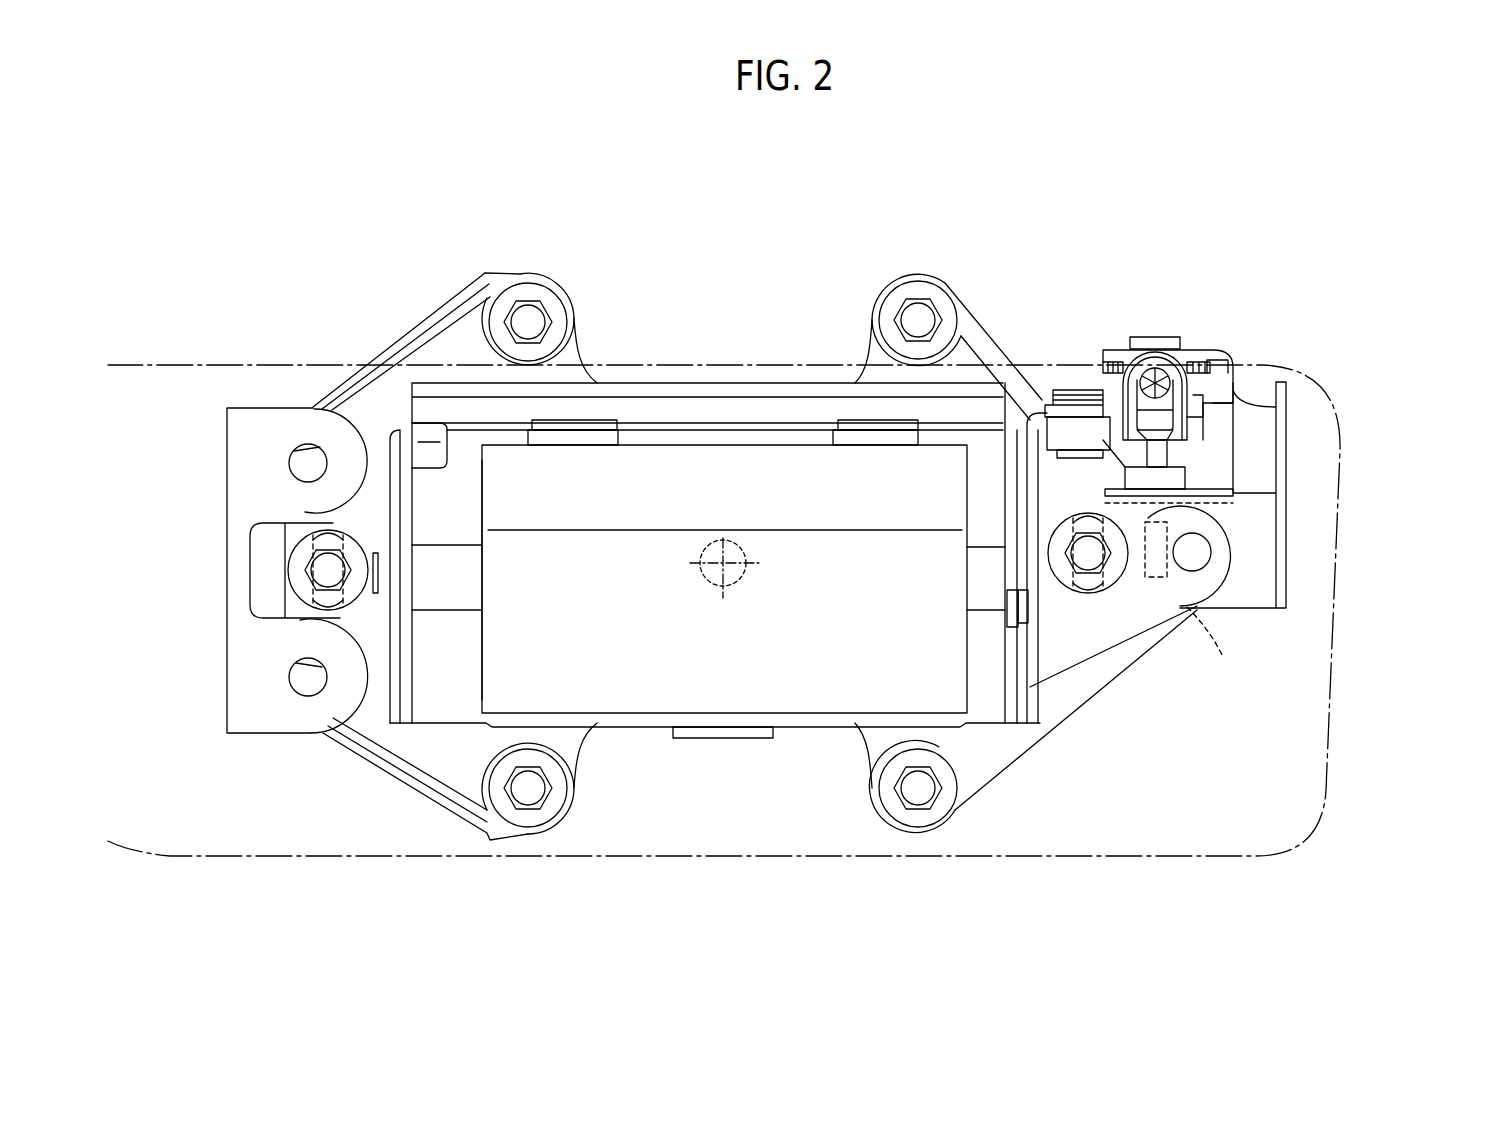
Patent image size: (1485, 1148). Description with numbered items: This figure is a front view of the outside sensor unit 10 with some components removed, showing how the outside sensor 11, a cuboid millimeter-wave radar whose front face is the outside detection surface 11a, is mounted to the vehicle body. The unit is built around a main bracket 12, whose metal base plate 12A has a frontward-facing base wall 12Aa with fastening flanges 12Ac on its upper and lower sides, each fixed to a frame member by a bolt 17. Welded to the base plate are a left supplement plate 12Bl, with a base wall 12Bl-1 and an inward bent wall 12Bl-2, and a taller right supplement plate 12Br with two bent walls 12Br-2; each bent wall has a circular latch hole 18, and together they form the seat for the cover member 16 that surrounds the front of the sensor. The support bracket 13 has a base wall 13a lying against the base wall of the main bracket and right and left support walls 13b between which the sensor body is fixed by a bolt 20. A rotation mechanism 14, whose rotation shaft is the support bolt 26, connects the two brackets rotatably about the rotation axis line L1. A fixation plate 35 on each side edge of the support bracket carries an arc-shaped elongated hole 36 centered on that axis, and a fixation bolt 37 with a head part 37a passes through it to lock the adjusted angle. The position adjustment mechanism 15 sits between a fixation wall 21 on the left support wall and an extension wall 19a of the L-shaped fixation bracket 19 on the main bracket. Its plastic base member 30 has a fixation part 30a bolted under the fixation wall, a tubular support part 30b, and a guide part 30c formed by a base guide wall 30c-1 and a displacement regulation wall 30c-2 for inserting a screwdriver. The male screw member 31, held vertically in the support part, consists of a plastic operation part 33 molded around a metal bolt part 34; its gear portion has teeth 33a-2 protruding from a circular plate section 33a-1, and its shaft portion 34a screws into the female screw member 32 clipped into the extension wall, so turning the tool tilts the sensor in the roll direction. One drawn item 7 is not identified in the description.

The vehicle 7 is at (517, 792).
The outside sensor unit 10 is at (1017, 206).
The outside sensor 11 is at (724, 684).
The outside detection surface 11a is at (600, 660).
The main bracket 12 is at (1088, 716).
The base plate 12A is at (755, 553).
The base wall 12Aa is at (1013, 398).
The fastening flanges 12Ac is at (513, 272).
The right supplement plate 12Br is at (247, 570).
The bent wall 12Br-2 is at (268, 415).
The left supplement plate 12Bl is at (1302, 533).
The base wall 12Bl-1 is at (1250, 500).
The bent wall 12Bl-2 is at (1262, 606).
The support bracket 13 is at (715, 501).
The base wall 13a is at (700, 408).
The support wall 13b is at (390, 673).
The rotation mechanism 14 is at (708, 582).
The position adjustment mechanism 15 is at (1192, 342).
The cover member 16 is at (1320, 838).
The bolt 17 is at (535, 312).
The latch hole 18 is at (325, 455).
The fixation bracket 19 is at (1287, 458).
The extension wall 19a is at (1157, 493).
The bolt 20 is at (353, 517).
The fixation wall 21 is at (1080, 435).
The support bolt 26 is at (745, 573).
The base member 30 is at (1263, 321).
The fixation part 30a is at (1065, 410).
The support part 30b is at (1117, 383).
The guide part 30c is at (1292, 274).
The base guide wall 30c-1 is at (1207, 367).
The displacement regulation wall 30c-2 is at (1152, 350).
The male screw member 31 is at (1203, 360).
The female screw member 32 is at (1177, 473).
The operation part 33 is at (1198, 284).
The circular plate section 33a-1 is at (1147, 358).
The teeth 33a-2 is at (1200, 360).
The bolt part 34 is at (1160, 448).
The shaft portion 34a is at (1216, 645).
The fixation plate 35 is at (408, 640).
The elongated hole 36 is at (325, 600).
The fixation bolt 37 is at (707, 628).
The head part 37a is at (312, 572).
The rotation axis line L1 is at (725, 563).